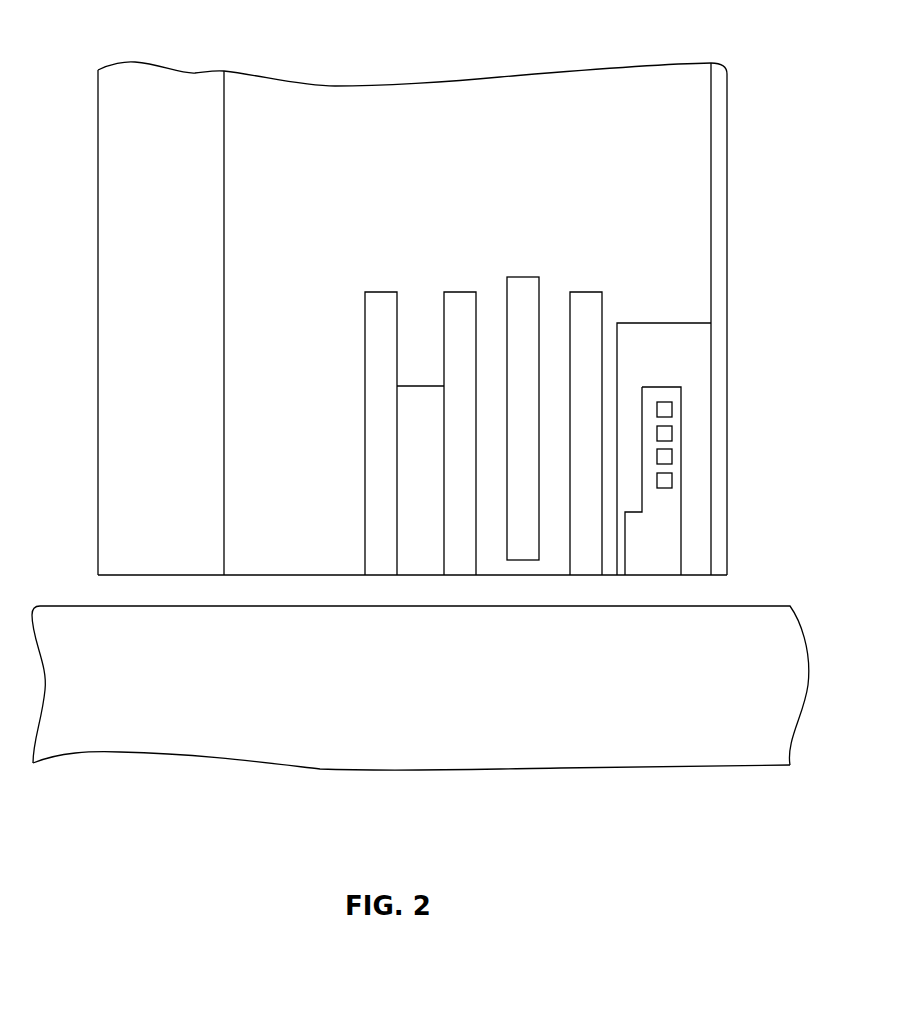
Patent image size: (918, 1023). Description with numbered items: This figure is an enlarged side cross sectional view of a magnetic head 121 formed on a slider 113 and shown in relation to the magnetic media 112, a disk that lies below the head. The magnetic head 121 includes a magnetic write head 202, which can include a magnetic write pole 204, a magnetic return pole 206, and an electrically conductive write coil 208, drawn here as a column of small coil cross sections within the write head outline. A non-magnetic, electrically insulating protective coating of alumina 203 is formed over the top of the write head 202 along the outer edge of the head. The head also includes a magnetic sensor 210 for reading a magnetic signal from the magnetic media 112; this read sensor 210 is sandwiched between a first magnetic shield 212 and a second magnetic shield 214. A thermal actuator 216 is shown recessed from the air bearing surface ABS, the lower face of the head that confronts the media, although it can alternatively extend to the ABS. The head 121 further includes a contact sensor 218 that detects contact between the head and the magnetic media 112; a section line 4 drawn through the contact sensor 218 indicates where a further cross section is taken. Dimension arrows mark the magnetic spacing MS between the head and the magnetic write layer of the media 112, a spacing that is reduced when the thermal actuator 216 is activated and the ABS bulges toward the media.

The slider 113 is at (141, 97).
The magnetic head 121 is at (335, 86).
The alumina 203 is at (720, 147).
The magnetic write head 202 is at (676, 323).
The electrically conductive write coil 208 is at (665, 410).
The thermal actuator 216 is at (520, 283).
The second magnetic shield 214 is at (372, 300).
The magnetic sensor 210 is at (421, 393).
The first magnetic shield 212 is at (462, 302).
The contact sensor 218 is at (592, 305).
The magnetic write pole 204 is at (622, 565).
The magnetic return pole 206 is at (697, 565).
The magnetic media 112 is at (398, 709).
The section line 4 is at (586, 326).
The air bearing surface ABS is at (498, 576).
The magnetic spacing MS is at (767, 733).